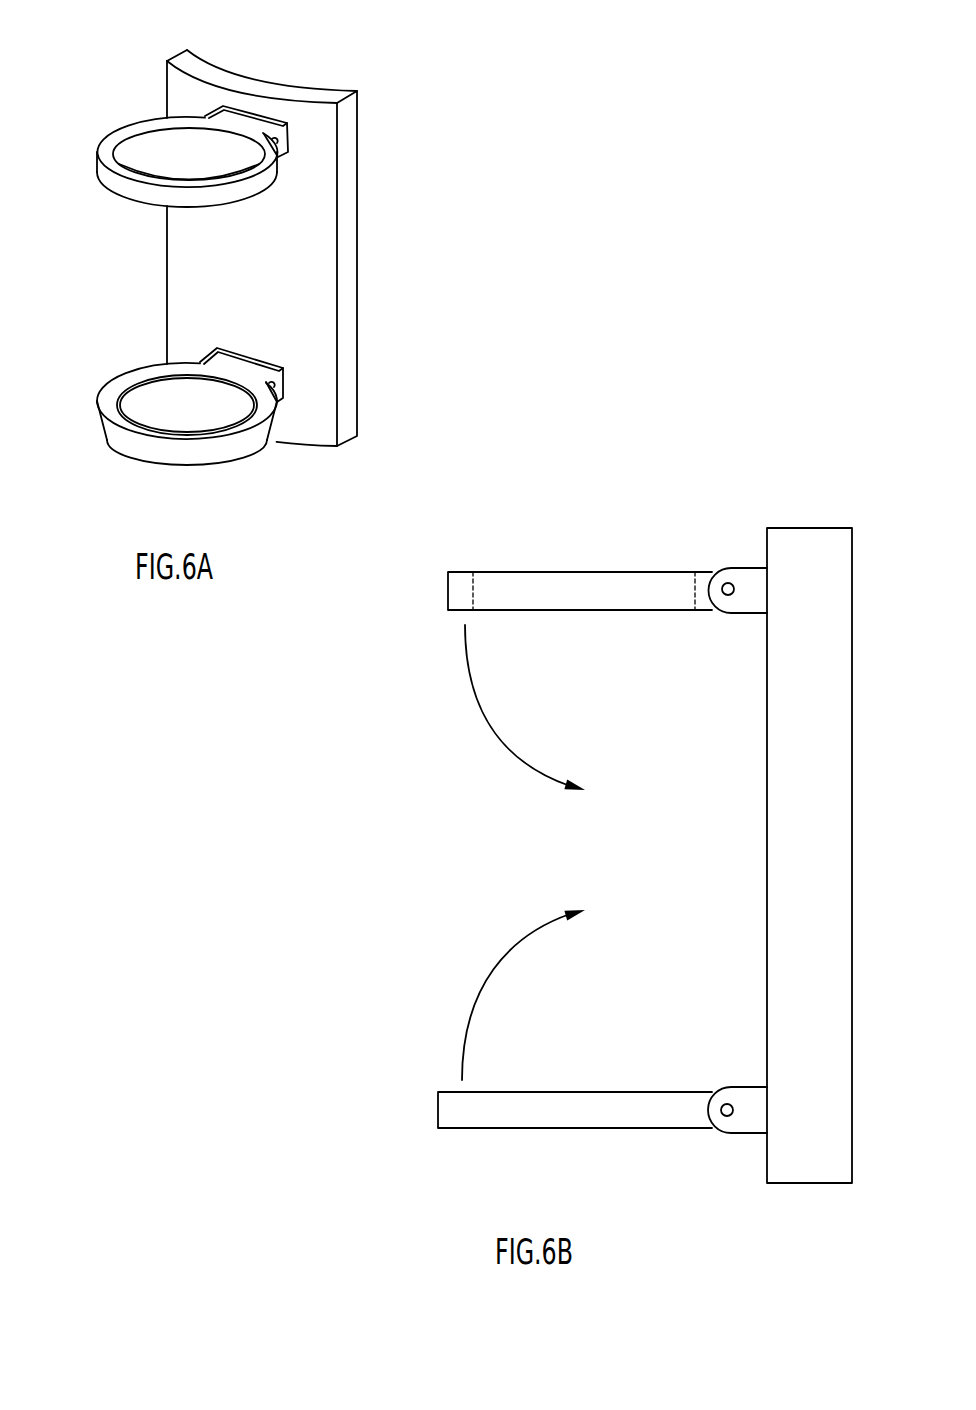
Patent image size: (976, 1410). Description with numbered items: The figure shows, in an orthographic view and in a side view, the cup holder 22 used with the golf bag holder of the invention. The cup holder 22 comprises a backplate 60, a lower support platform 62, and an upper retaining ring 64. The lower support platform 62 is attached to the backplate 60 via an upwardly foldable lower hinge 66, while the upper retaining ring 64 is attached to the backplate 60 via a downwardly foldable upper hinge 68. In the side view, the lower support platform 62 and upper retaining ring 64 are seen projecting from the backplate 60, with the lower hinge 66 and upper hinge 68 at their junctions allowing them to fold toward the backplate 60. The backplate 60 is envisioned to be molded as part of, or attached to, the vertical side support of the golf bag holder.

In FIG. 6A, the cup holder 22 is at (395, 205).
In FIG. 6B, the cup holder 22 is at (453, 840).
In FIG. 6A, the backplate 60 is at (347, 270).
In FIG. 6B, the backplate 60 is at (828, 547).
In FIG. 6A, the lower support platform 62 is at (120, 435).
In FIG. 6B, the lower support platform 62 is at (508, 1115).
In FIG. 6A, the upper retaining ring 64 is at (140, 127).
In FIG. 6B, the upper retaining ring 64 is at (461, 583).
In FIG. 6A, the lower hinge 66 is at (287, 373).
In FIG. 6B, the lower hinge 66 is at (728, 1123).
In FIG. 6A, the upper hinge 68 is at (265, 123).
In FIG. 6B, the upper hinge 68 is at (724, 568).